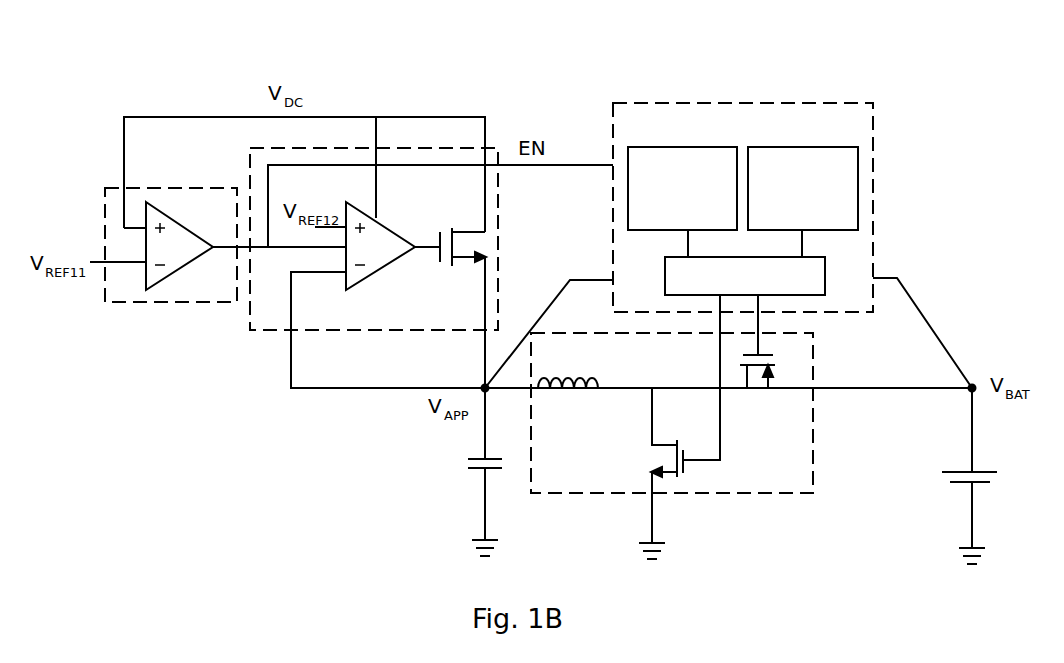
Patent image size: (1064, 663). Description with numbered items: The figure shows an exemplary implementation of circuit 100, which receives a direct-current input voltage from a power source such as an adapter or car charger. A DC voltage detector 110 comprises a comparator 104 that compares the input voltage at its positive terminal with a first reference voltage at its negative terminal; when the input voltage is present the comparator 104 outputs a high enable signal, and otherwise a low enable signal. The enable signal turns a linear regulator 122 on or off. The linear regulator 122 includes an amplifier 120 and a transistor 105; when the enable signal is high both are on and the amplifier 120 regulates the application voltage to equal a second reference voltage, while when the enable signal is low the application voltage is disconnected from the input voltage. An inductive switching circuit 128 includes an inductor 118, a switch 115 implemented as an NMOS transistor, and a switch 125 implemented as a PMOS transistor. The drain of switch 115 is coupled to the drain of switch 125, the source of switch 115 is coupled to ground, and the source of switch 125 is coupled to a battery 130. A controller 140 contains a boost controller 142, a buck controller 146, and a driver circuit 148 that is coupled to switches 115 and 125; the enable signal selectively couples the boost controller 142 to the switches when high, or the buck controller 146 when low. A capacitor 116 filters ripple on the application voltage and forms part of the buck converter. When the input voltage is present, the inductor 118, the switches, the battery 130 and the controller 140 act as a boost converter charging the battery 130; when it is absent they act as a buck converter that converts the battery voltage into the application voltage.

The circuit 100 is at (880, 39).
The comparator 104 is at (197, 230).
The transistor 105 is at (463, 263).
The DC voltage detector 110 is at (171, 257).
The switch 115 is at (641, 473).
The capacitor 116 is at (460, 472).
The inductor 118 is at (568, 408).
The amplifier 120 is at (385, 228).
The linear regulator 122 is at (374, 256).
The switch 125 is at (760, 389).
The inductive switching circuit 128 is at (672, 432).
The battery 130 is at (992, 476).
The controller 140 is at (743, 193).
The boost controller 142 is at (690, 137).
The buck controller 146 is at (788, 147).
The driver circuit 148 is at (836, 266).